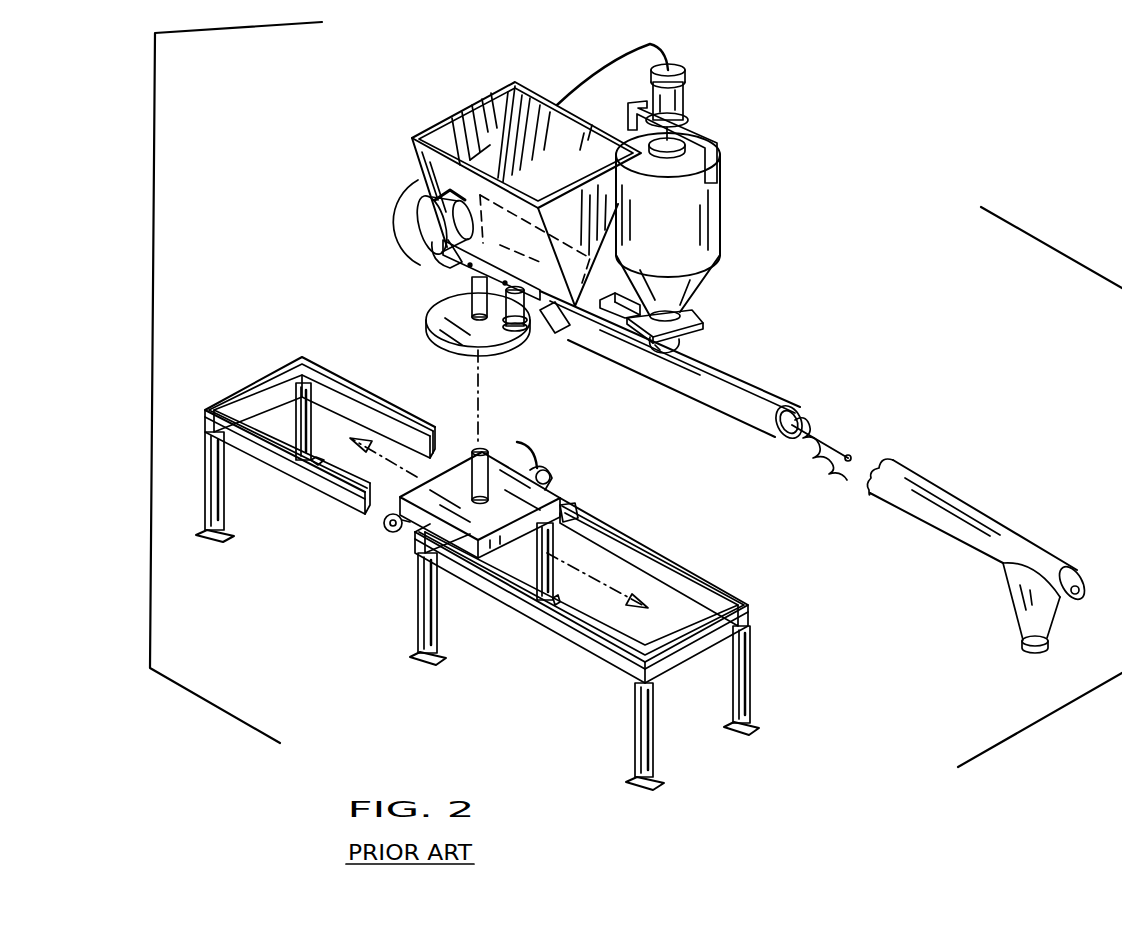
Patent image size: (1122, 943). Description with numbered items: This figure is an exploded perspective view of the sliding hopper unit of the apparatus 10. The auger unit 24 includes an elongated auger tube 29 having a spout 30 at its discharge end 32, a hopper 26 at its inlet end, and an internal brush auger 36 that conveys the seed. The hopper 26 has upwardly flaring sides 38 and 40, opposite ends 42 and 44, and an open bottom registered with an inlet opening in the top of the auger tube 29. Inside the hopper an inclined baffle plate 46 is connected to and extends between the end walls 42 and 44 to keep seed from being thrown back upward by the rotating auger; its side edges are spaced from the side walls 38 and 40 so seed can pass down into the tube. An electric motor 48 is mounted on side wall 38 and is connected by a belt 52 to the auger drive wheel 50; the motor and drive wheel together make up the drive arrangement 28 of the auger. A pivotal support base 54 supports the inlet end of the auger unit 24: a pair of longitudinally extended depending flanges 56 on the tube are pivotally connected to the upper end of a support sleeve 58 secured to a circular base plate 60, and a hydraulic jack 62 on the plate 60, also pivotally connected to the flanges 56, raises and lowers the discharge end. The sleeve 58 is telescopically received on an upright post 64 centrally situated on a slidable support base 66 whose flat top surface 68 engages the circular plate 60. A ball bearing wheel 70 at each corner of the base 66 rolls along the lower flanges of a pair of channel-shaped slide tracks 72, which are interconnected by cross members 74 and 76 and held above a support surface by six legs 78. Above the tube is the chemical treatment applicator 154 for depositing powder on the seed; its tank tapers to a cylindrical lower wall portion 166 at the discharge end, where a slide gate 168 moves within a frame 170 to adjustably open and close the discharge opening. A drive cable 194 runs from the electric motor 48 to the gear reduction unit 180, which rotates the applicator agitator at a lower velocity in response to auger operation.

The apparatus 10 is at (336, 143).
The auger unit 24 is at (728, 385).
The hopper 26 is at (511, 163).
The drive motor assembly 28 is at (413, 240).
The auger tube 29 is at (722, 366).
The spout 30 is at (1028, 610).
The discharge end 32 is at (986, 556).
The brush auger 36 is at (842, 433).
The hopper side wall 38 is at (420, 135).
The hopper side wall 40 is at (538, 115).
The hopper end wall 42 is at (460, 120).
The hopper end wall 44 is at (585, 195).
The baffle plate 46 is at (548, 325).
The electric motor 48 is at (440, 222).
The auger drive wheel 50 is at (440, 255).
The belt 52 is at (422, 232).
The pivotal support base 54 is at (451, 340).
The depending flanges 56 is at (465, 268).
The support sleeve 58 is at (470, 312).
The circular base plate 60 is at (470, 338).
The hydraulic jack 62 is at (514, 332).
The upright post 64 is at (488, 456).
The slidable support base 66 is at (508, 458).
The flat top surface 68 is at (480, 477).
The ball bearing wheel 70 is at (572, 520).
The slide tracks 72 is at (680, 568).
The cross member 74 is at (255, 388).
The cross member 76 is at (581, 599).
The legs 78 is at (312, 410).
The chemical treatment applicator 154 is at (674, 161).
The cylindrical lower wall portion 166 is at (665, 350).
The slide gate 168 is at (618, 316).
The frame 170 is at (690, 314).
The gear reduction unit 180 is at (688, 103).
The drive cable 194 is at (600, 78).